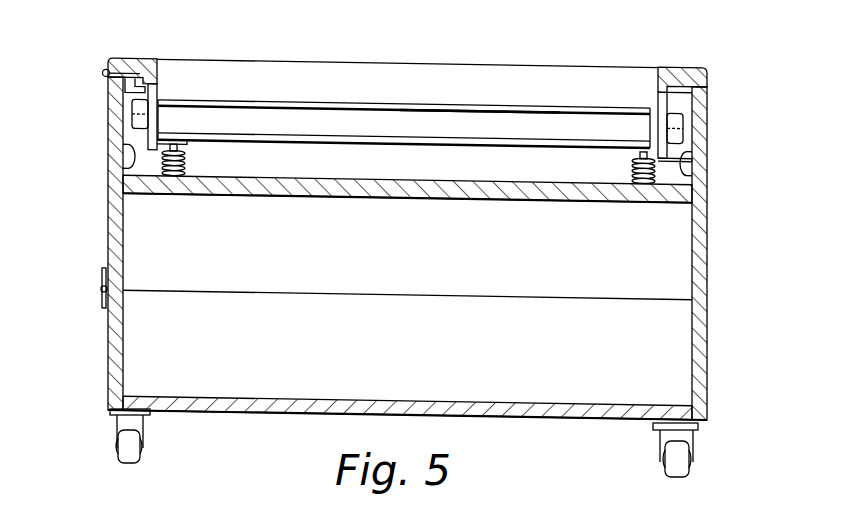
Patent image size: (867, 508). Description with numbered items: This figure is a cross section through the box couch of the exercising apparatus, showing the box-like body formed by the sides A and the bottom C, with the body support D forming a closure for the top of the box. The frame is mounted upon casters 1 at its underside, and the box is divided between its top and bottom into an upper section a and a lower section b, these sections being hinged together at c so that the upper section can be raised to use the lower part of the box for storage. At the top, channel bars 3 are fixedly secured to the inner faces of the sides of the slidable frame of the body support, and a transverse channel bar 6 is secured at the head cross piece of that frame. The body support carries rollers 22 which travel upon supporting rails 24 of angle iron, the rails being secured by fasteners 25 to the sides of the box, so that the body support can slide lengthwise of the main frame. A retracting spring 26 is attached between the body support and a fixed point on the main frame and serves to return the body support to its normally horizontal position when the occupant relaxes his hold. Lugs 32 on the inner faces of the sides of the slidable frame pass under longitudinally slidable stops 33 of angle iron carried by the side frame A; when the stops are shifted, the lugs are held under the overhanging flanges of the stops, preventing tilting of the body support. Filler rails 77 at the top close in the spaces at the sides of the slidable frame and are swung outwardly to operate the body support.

The casters 1 is at (138, 463).
The channel bars 3 is at (160, 101).
The transverse channel bar 6 is at (476, 108).
The rollers 22 is at (157, 92).
The supporting rails 24 is at (146, 128).
The fasteners 25 is at (127, 157).
The retracting spring 26 is at (187, 160).
The lugs 32 is at (135, 90).
The longitudinally slidable stops 33 is at (107, 78).
The filler rails 77 is at (125, 57).
The sides A is at (107, 337).
The bottom C is at (288, 412).
The hinge c is at (103, 289).
The body support D is at (407, 77).
The upper section a is at (368, 256).
The lower section b is at (373, 337).